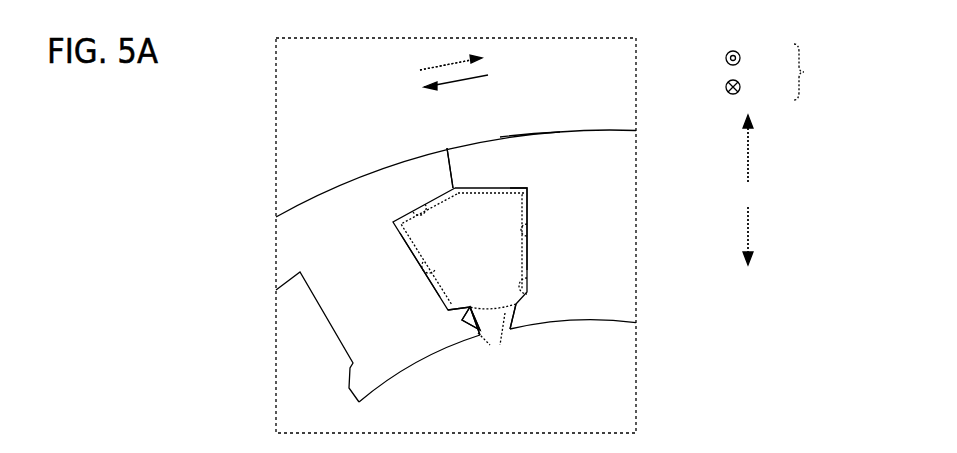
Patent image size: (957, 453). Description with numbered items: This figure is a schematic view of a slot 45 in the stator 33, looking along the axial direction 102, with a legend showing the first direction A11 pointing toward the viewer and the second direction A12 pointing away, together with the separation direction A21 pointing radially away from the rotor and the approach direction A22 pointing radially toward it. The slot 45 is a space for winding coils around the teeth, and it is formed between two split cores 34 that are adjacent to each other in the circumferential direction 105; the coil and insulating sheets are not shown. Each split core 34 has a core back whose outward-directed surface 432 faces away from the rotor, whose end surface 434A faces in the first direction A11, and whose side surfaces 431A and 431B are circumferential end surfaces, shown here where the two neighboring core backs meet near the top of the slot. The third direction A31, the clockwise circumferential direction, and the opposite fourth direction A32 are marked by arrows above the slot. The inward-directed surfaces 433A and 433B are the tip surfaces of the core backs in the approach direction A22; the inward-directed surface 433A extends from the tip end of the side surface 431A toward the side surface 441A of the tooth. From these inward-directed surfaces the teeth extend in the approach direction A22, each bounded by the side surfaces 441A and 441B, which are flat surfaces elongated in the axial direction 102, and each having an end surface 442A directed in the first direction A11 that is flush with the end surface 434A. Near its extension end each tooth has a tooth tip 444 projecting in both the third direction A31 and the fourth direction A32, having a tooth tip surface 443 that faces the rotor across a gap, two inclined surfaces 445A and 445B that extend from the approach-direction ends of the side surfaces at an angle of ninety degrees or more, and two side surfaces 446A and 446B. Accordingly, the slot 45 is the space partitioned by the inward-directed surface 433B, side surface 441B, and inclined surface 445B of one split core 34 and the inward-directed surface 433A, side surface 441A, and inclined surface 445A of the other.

The stator 33 is at (340, 96).
The split core 34 is at (330, 166).
The slot 45 is at (488, 257).
The axial direction 102 is at (820, 72).
The circumferential direction 105 is at (448, 64).
The side surface 431A is at (455, 169).
The side surface 431B is at (451, 176).
The outward-directed surface 432 is at (373, 166).
The inward-directed surface 433A is at (530, 186).
The inward-directed surface 433B is at (400, 215).
The end surface 434A is at (530, 136).
The side surface 441A is at (522, 230).
The side surface 441B is at (437, 276).
The end surface 442A is at (343, 303).
The tooth tip surface 443 is at (382, 386).
The tooth tip 444 is at (447, 343).
The inclined surface 445A is at (532, 279).
The inclined surface 445B is at (478, 315).
The side surface 446A is at (492, 345).
The side surface 446B is at (498, 350).
The first direction A11 is at (757, 57).
The second direction A12 is at (757, 85).
The separation direction A21 is at (750, 158).
The approach direction A22 is at (750, 228).
The third direction A31 is at (450, 69).
The fourth direction A32 is at (462, 82).